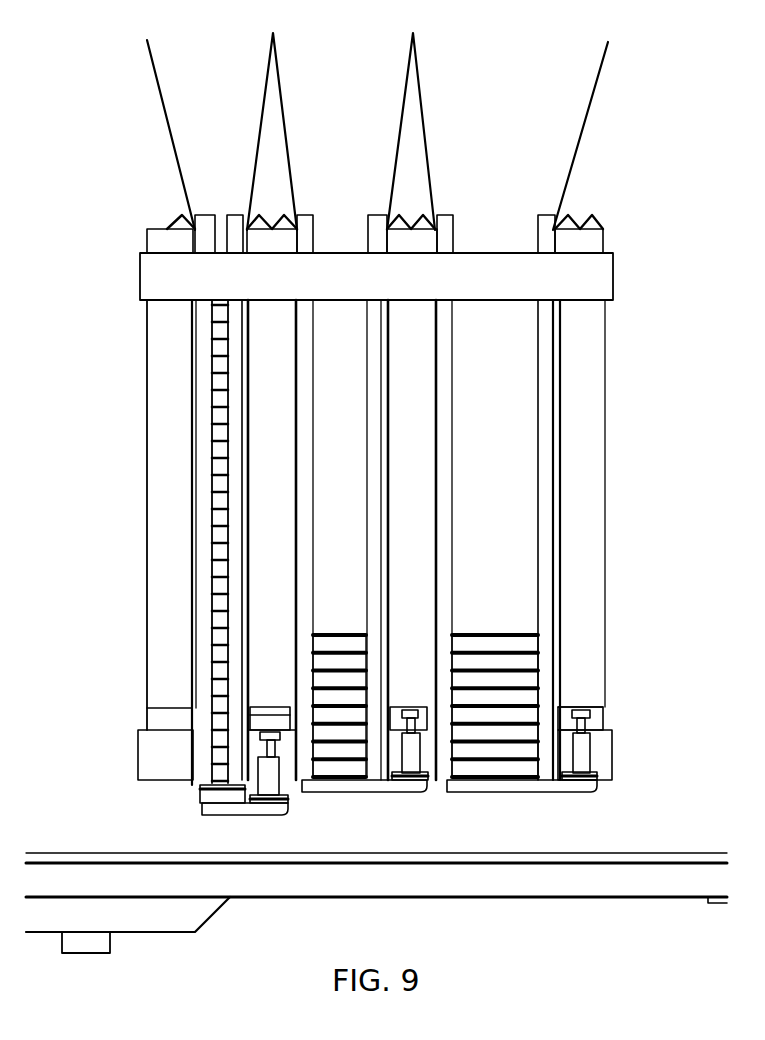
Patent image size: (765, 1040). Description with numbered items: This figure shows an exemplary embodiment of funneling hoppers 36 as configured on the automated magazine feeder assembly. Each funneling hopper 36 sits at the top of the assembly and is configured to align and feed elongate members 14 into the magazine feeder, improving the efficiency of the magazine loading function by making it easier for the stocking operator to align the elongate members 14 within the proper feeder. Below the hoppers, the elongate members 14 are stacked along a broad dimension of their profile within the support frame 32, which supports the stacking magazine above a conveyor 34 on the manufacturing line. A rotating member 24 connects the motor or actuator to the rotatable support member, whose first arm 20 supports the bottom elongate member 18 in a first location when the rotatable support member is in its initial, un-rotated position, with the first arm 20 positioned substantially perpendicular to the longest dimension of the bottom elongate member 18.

The funneling hopper 36 is at (592, 110).
The elongate members 14 is at (510, 637).
The support frame 32 is at (592, 633).
The rotating member 24 is at (583, 747).
The first arm 20 is at (247, 808).
The bottom elongate member 18 is at (200, 797).
The conveyor 34 is at (595, 857).